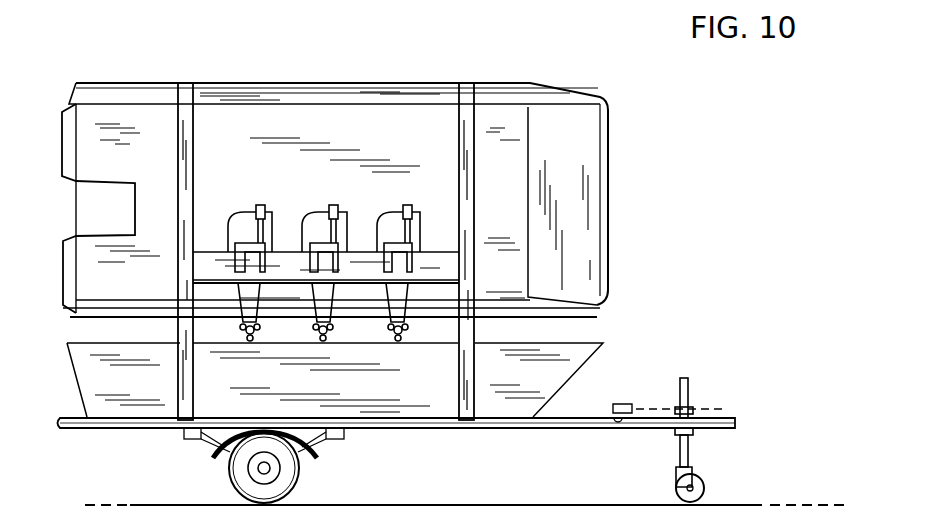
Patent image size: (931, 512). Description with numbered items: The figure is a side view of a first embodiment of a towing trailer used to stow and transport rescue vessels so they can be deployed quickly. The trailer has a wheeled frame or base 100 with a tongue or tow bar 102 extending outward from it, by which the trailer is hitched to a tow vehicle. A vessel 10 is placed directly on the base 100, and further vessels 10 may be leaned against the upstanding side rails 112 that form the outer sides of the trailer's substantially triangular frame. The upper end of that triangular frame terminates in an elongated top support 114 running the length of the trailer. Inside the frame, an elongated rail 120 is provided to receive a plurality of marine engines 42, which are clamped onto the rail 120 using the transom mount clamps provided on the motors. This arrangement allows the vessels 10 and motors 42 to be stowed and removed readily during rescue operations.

The vessel 10 is at (585, 240).
The marine engine 42 is at (312, 217).
The wheeled frame or base 100 is at (463, 428).
The tongue or tow bar 102 is at (728, 412).
The side rail 112 is at (186, 164).
The elongated top support 114 is at (331, 90).
The elongated rail 120 is at (215, 260).